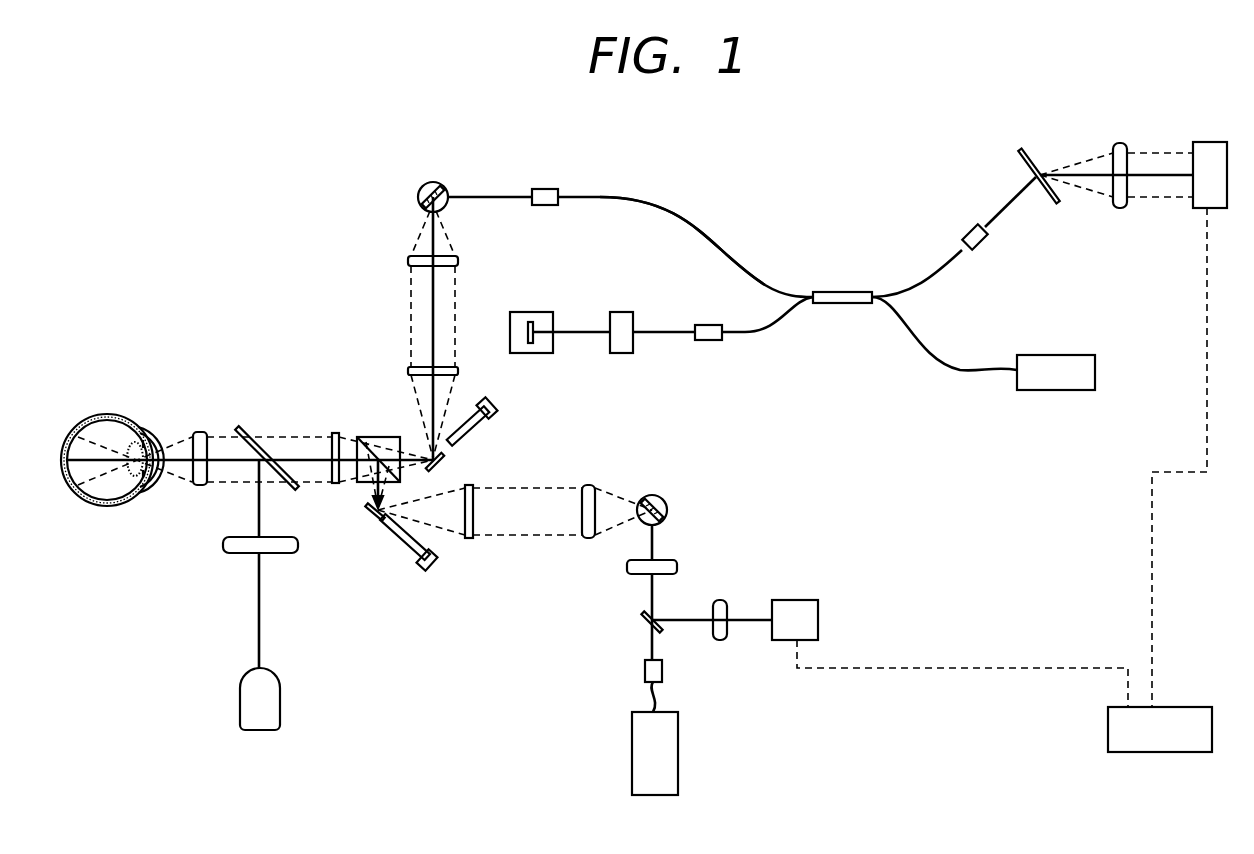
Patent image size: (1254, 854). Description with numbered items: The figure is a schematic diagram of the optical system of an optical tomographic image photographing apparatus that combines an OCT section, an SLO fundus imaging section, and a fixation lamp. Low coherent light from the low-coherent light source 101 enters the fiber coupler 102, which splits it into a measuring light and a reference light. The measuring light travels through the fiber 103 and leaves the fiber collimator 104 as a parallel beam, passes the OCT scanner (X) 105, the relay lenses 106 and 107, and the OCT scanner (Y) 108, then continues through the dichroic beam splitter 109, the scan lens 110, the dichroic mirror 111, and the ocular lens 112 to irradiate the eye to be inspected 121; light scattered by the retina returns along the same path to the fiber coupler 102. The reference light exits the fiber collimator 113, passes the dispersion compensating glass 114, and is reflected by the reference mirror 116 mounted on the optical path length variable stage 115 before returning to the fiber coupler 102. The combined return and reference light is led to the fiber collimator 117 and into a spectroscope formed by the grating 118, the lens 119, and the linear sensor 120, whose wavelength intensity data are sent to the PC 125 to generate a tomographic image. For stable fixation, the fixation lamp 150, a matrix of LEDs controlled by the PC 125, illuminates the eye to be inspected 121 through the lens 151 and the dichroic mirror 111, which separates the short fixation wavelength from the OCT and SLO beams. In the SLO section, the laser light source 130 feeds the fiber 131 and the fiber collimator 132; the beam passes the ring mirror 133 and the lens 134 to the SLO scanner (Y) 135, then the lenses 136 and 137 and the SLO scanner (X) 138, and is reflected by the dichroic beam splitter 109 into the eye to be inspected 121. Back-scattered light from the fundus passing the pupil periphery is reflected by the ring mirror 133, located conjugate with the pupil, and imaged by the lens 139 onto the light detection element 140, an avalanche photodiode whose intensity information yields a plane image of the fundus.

The low-coherent light source 101 is at (1058, 355).
The fiber coupler 102 is at (843, 292).
The fiber 103 is at (688, 205).
The fiber collimator 104 is at (545, 189).
The OCT scanner (X) 105 is at (438, 182).
The relay lens 106 is at (408, 260).
The relay lens 107 is at (408, 369).
The OCT scanner (Y) 108 is at (480, 433).
The dichroic beam splitter 109 is at (381, 437).
The scan lens 110 is at (336, 433).
The dichroic mirror 111 is at (244, 428).
The ocular lens 112 is at (200, 432).
The fiber collimator 113 is at (707, 325).
The dispersion compensating glass 114 is at (621, 312).
The optical path length variable stage 115 is at (531, 345).
The reference mirror 116 is at (535, 312).
The fiber collimator 117 is at (972, 225).
The grating 118 is at (1030, 150).
The lens 119 is at (1120, 143).
The linear sensor 120 is at (1208, 142).
The eye to be inspected 121 is at (127, 413).
The PC 125 is at (1108, 728).
The laser light source 130 is at (632, 733).
The fiber 131 is at (657, 694).
The fiber collimator 132 is at (645, 670).
The ring mirror 133 is at (642, 617).
The lens 134 is at (627, 567).
The SLO scanner (Y) 135 is at (655, 495).
The lens 136 is at (588, 485).
The lens 137 is at (468, 538).
The SLO scanner (X) 138 is at (405, 550).
The lens 139 is at (720, 600).
The light detection element 140 is at (798, 600).
The fixation lamp 150 is at (240, 698).
The lens 151 is at (223, 545).